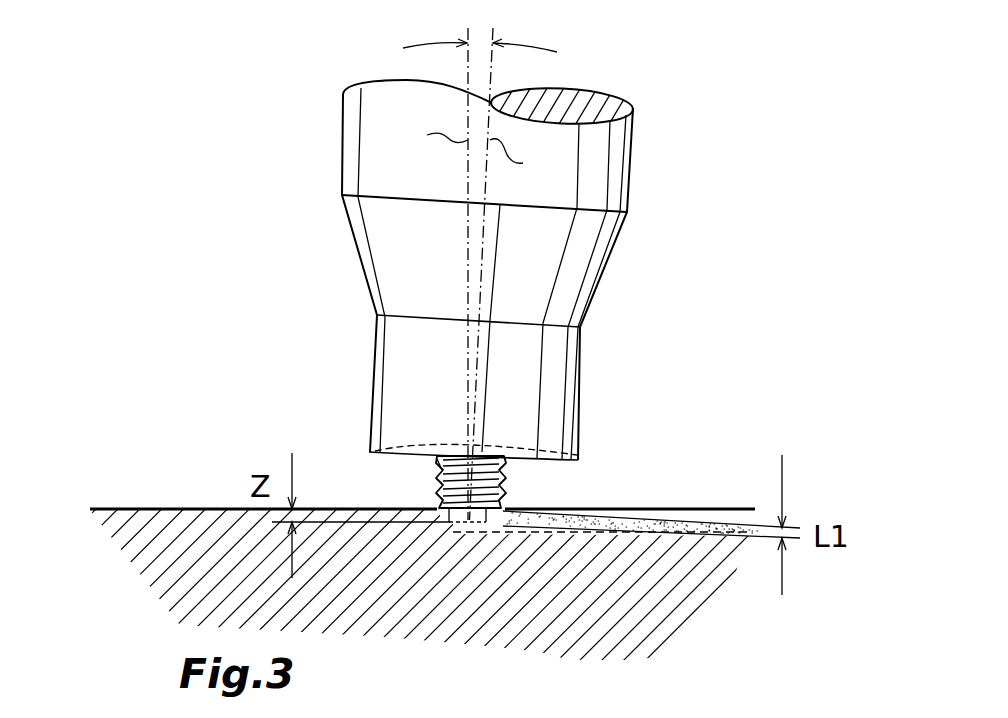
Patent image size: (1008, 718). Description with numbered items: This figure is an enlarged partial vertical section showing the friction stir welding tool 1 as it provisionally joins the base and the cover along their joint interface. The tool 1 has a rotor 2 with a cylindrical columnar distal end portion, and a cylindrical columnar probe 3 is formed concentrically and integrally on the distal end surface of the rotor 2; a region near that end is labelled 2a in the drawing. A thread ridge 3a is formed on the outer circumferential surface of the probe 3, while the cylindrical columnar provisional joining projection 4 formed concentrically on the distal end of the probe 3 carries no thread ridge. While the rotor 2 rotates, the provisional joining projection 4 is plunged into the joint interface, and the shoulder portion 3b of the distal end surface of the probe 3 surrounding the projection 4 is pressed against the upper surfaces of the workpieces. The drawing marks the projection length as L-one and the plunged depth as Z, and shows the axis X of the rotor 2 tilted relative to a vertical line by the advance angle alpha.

The friction stir welding tool 1 is at (673, 180).
The rotor 2 is at (548, 393).
The end face of shank 2a is at (380, 453).
The probe 3 is at (507, 487).
The thread ridge 3a is at (435, 477).
The shoulder portion 3b is at (493, 518).
The provisional joining projection 4 is at (474, 533).